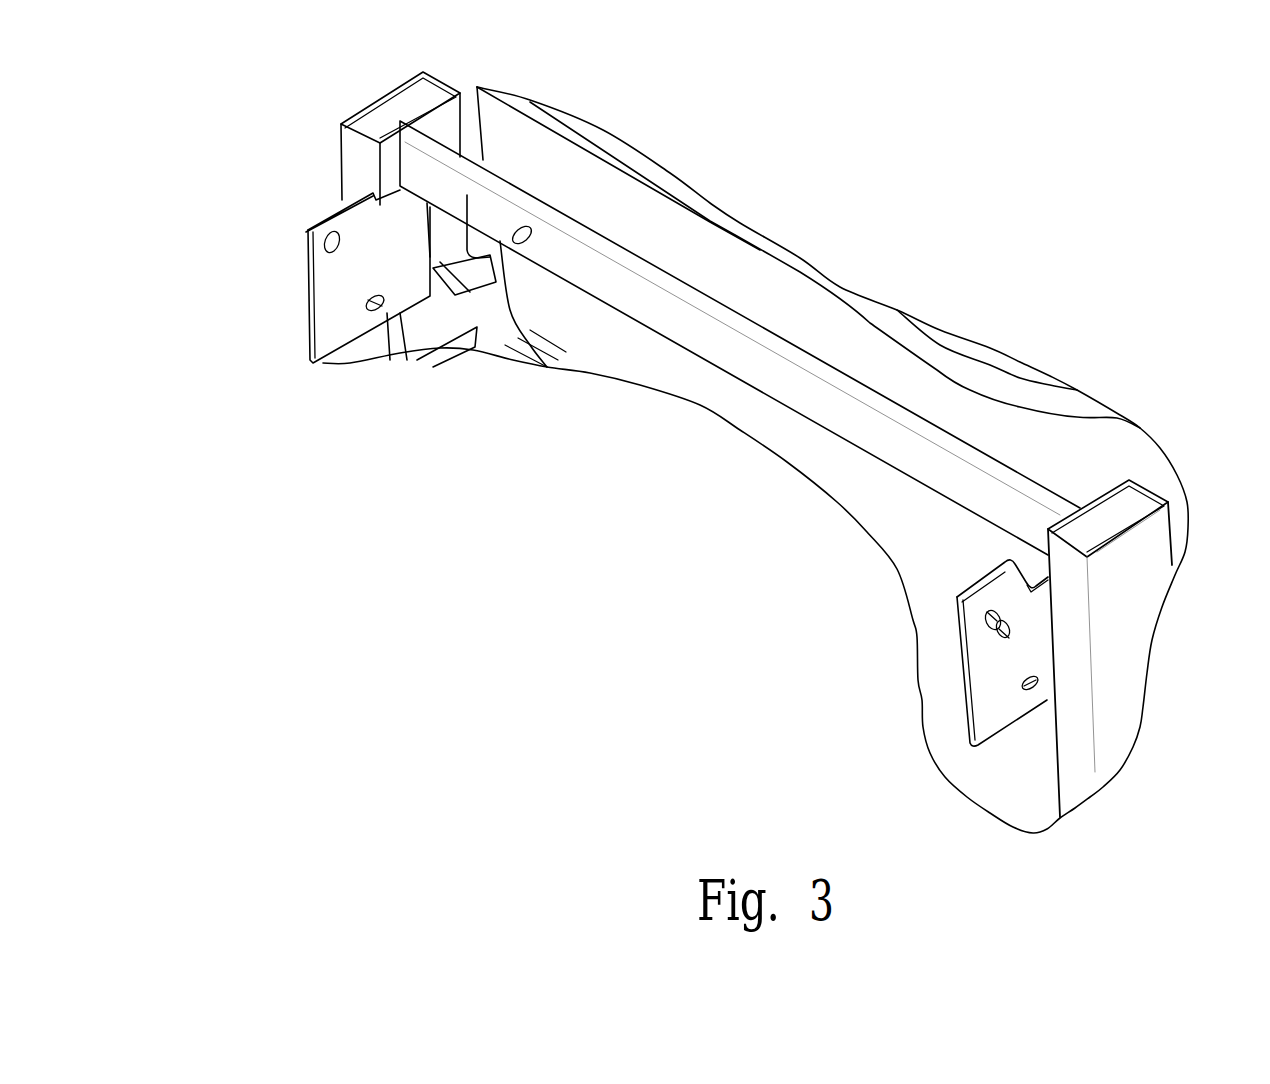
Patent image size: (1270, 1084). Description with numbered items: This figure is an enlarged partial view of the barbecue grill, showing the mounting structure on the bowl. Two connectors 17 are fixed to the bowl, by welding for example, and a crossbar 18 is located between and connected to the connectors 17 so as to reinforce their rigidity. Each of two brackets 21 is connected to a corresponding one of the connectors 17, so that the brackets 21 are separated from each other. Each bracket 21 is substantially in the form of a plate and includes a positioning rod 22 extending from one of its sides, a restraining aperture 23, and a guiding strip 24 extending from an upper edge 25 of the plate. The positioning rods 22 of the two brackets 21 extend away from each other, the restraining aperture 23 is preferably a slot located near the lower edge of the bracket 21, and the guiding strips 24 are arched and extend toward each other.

The connector 17 is at (363, 167).
The crossbar 18 is at (642, 300).
The bracket 21 is at (318, 354).
The positioning rod 22 is at (995, 624).
The restraining aperture 23 is at (1040, 688).
The guiding strip 24 is at (990, 583).
The upper edge 25 is at (1035, 577).